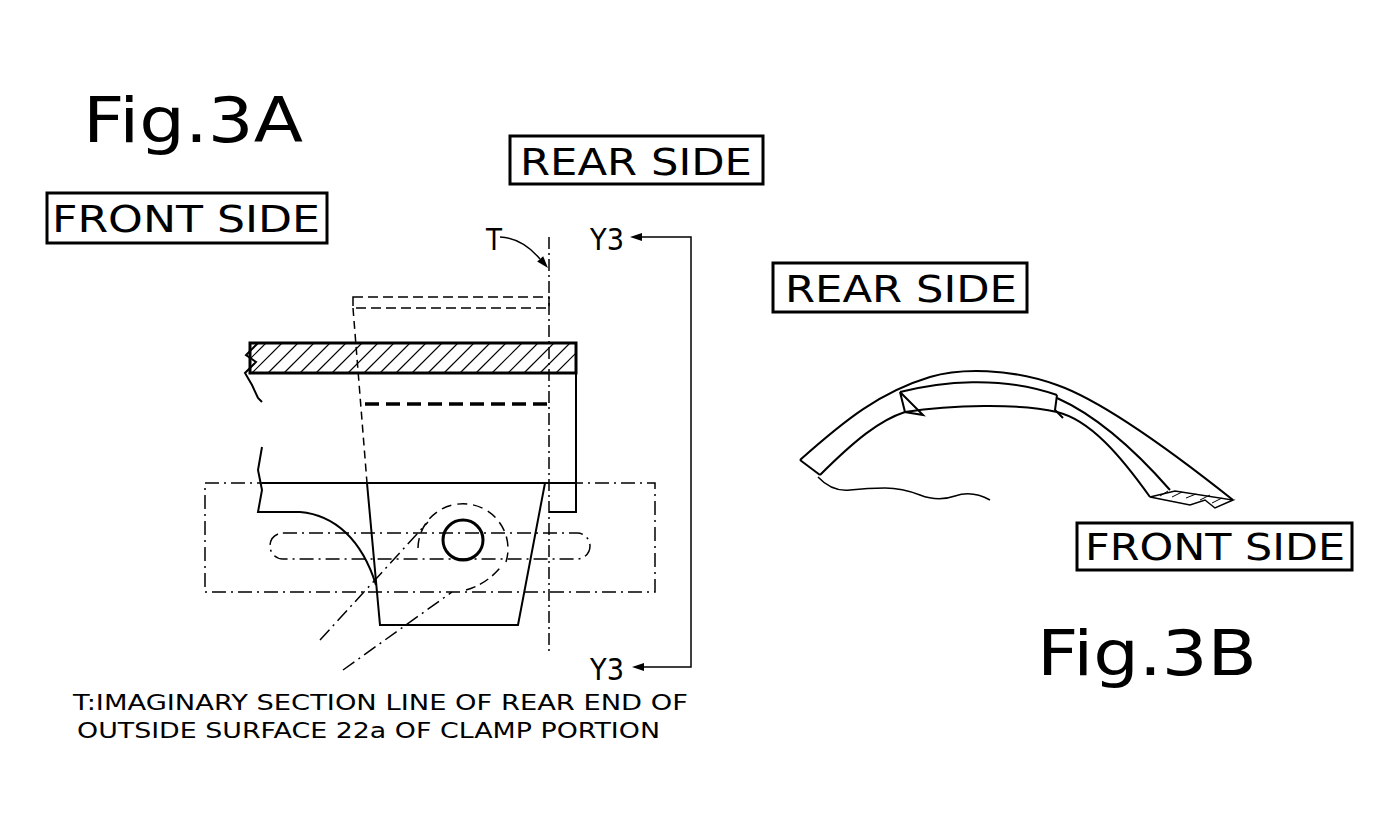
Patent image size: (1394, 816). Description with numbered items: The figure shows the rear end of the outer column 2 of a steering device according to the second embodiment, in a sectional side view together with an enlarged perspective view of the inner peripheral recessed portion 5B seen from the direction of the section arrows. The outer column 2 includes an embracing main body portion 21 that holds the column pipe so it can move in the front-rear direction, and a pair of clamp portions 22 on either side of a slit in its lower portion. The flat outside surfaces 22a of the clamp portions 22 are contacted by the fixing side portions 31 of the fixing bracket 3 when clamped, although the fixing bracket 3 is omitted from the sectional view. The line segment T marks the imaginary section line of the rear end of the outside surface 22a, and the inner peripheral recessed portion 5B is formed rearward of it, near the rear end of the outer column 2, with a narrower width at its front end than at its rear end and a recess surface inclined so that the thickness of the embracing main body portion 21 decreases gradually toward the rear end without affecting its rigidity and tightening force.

In FIG. 3A, the outer column 2 is at (266, 334).
In FIG. 3B, the outer column 2 is at (810, 421).
In FIG. 3A, the fixing bracket 3 is at (416, 279).
In FIG. 3A, the inner peripheral recessed portion 5B is at (591, 353).
In FIG. 3B, the inner peripheral recessed portion 5B is at (1005, 394).
In FIG. 3A, the embracing main body portion 21 is at (576, 430).
In FIG. 3B, the embracing main body portion 21 is at (868, 398).
In FIG. 3A, the clamp portions 22 is at (528, 574).
In FIG. 3A, the outside surface of clamp portion 22a is at (385, 448).
In FIG. 3A, the fixing side portions 31 is at (360, 404).